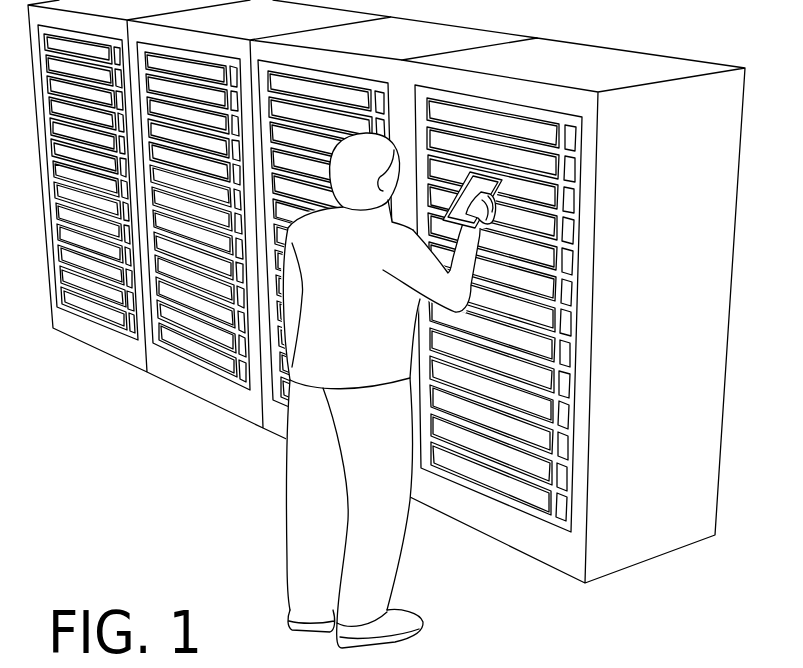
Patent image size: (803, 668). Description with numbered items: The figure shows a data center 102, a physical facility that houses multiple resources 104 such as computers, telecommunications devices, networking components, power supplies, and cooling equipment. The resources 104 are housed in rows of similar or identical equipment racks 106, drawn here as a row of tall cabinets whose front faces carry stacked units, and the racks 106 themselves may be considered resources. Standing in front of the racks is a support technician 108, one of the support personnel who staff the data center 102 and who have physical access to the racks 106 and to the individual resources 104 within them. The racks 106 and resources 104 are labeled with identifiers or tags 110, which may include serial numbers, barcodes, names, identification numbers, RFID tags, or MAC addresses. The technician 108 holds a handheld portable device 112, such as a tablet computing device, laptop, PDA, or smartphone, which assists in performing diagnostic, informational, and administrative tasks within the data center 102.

The data center 102 is at (145, 513).
The resources 104 is at (475, 148).
The equipment racks 106 is at (573, 306).
The support technicians 108 is at (434, 390).
The identifiers or tags 110 is at (575, 164).
The portable device 112 is at (478, 186).